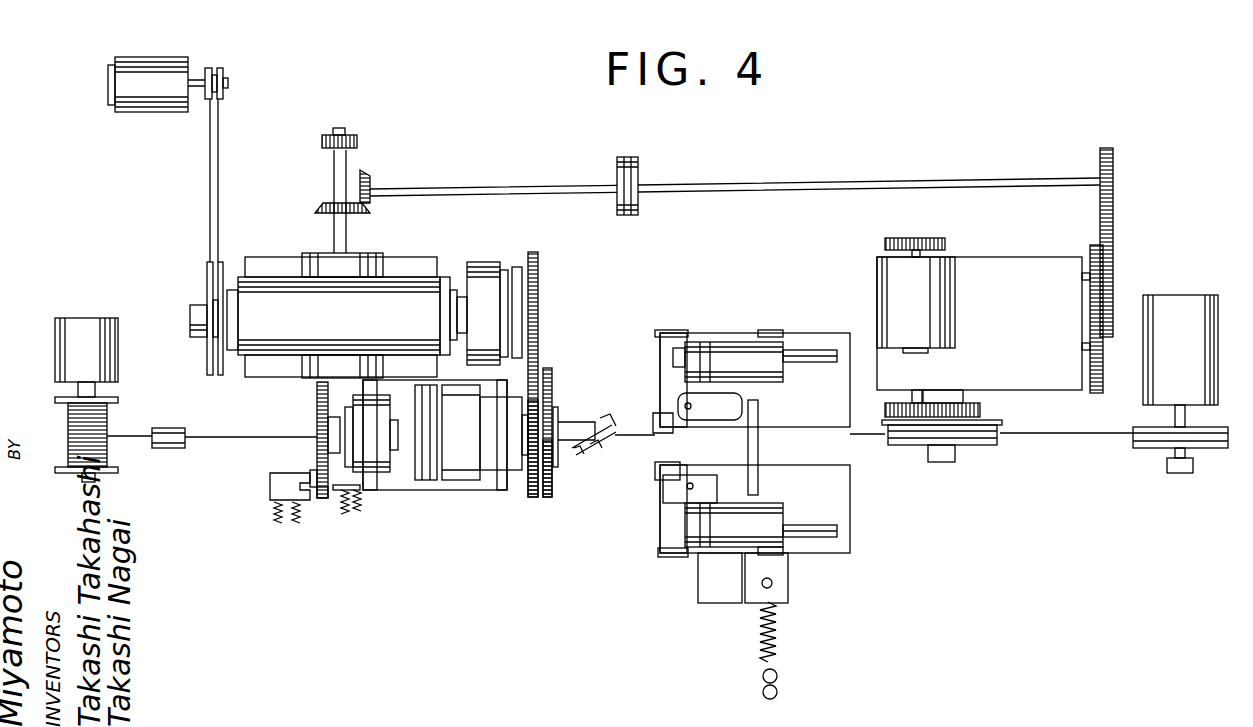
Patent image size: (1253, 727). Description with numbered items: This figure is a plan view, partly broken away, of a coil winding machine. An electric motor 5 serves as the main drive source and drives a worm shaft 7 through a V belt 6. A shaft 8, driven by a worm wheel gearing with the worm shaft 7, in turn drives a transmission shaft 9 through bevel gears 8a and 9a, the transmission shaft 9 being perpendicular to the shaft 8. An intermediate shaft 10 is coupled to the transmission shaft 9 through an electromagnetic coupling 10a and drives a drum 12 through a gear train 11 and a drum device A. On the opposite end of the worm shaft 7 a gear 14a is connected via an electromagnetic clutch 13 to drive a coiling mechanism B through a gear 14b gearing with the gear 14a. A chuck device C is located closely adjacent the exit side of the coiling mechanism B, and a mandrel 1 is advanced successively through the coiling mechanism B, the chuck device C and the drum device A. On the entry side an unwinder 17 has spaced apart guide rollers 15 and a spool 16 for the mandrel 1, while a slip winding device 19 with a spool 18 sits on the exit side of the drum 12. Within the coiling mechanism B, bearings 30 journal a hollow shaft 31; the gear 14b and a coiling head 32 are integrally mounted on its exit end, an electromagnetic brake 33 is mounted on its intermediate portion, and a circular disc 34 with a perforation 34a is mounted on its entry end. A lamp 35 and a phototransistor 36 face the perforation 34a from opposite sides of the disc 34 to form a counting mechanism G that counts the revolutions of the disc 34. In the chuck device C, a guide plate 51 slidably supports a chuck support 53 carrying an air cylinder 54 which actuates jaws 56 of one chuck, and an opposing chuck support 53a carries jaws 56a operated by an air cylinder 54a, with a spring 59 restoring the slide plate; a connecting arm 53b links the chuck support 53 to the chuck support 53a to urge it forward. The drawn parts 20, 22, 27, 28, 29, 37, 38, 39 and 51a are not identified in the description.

The mandrel 1 is at (247, 437).
The electric motor 5 is at (180, 105).
The V belt 6 is at (210, 216).
The worm shaft 7 is at (199, 337).
The shaft 8 is at (340, 236).
The bevel gear 8a is at (320, 205).
The transmission shaft 9 is at (499, 188).
The bevel gear 9a is at (368, 176).
The intermediate shaft 10 is at (846, 188).
The electromagnetic coupling 10a is at (638, 176).
The gear train 11 is at (1113, 250).
The drum 12 is at (992, 445).
The electromagnetic clutch 13 is at (480, 262).
The gear 14a is at (534, 254).
The gear 14b is at (536, 497).
The guide rollers 15 is at (174, 444).
The spool 16 is at (68, 462).
The unwinder 17 is at (90, 325).
The spool 18 is at (1202, 448).
The slip winding device 19 is at (1205, 398).
The housing 20 is at (1070, 380).
The gear 22 is at (932, 452).
The motor 27 is at (948, 308).
The knob 28 is at (934, 243).
The frame 29 is at (405, 490).
The bearings 30 is at (385, 475).
The hollow shaft 31 is at (322, 432).
The coiling head 32 is at (557, 478).
The electromagnetic brake 33 is at (442, 460).
The circular disc 34 is at (325, 498).
The perforation 34a is at (311, 480).
The lamp 35 is at (270, 495).
The phototransistor 36 is at (350, 520).
The gear 37 is at (549, 368).
The disc 38 is at (558, 410).
The switch 39 is at (606, 446).
The guide plate 51 is at (840, 416).
The cylinder 51a is at (838, 510).
The chuck support 53 is at (732, 352).
The chuck support 53a is at (732, 480).
The connecting arm 53b is at (758, 438).
The air cylinder 54 is at (813, 352).
The air cylinder 54a is at (836, 531).
The jaws 56 is at (658, 425).
The jaws 56a is at (660, 465).
The spring 59 is at (776, 634).
The drum device A is at (998, 254).
The coiling mechanism B is at (498, 508).
The chuck device C is at (684, 580).
The counting mechanism G is at (260, 540).